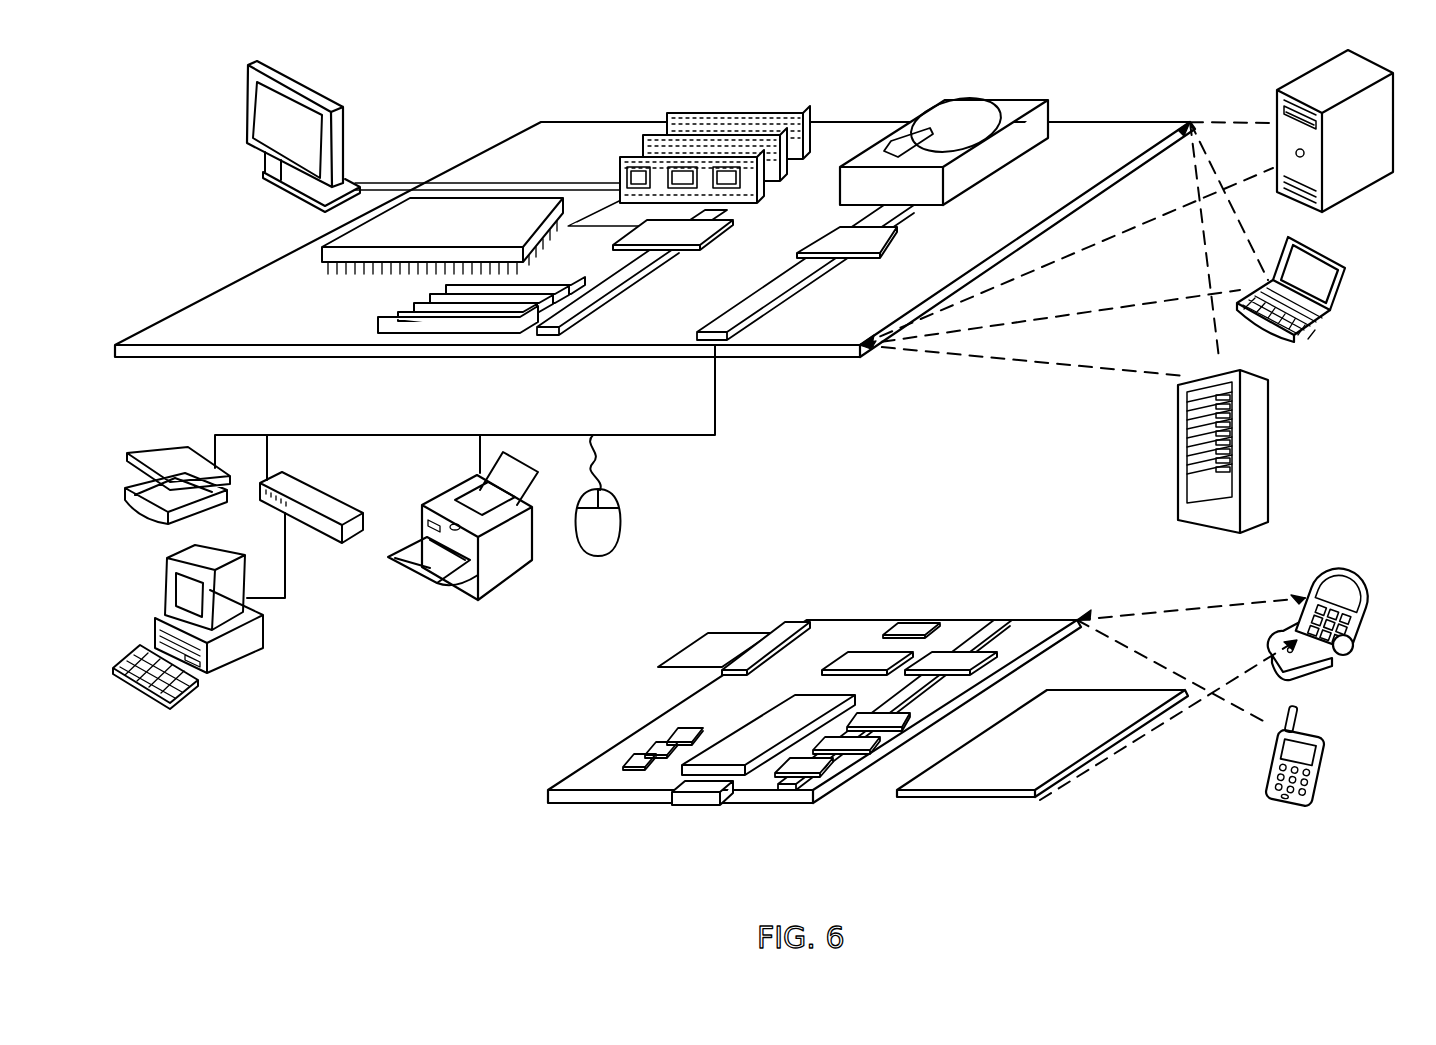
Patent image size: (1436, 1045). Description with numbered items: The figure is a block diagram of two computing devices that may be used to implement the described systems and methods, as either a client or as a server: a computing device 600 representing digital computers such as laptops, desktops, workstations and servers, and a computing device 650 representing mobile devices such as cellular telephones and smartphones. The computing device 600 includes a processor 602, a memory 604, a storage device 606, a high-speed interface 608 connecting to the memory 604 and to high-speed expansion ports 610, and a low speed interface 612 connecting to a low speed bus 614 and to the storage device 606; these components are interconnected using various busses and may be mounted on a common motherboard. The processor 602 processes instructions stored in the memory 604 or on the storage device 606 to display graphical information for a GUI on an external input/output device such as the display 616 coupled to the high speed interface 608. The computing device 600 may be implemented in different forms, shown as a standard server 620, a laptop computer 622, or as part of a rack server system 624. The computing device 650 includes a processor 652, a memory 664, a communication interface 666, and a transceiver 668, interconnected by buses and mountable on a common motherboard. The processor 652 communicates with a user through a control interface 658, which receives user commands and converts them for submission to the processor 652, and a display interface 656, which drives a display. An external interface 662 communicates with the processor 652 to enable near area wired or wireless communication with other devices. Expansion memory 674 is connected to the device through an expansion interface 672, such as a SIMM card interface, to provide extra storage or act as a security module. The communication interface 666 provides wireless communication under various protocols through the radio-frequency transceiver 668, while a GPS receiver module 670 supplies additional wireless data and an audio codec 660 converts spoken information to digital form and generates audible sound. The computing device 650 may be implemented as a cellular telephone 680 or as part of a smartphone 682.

The computing device 600 is at (456, 92).
The processor 602 is at (330, 250).
The memory 604 is at (677, 118).
The storage device 606 is at (945, 100).
The high-speed interface 608 is at (650, 233).
The high-speed expansion ports 610 is at (400, 313).
The low speed interface 612 is at (828, 235).
The low speed bus 614 is at (727, 343).
The display 616 is at (248, 67).
The standard server 620 is at (1277, 106).
The laptop computer 622 is at (1345, 270).
The rack server system 624 is at (1177, 478).
The computing device 650 is at (527, 800).
The processor 652 is at (740, 757).
The display interface 656 is at (815, 763).
The control interface 658 is at (850, 743).
The audio codec 660 is at (875, 718).
The external interface 662 is at (700, 803).
The memory 664 is at (650, 752).
The communication interface 666 is at (868, 658).
The transceiver 668 is at (953, 660).
The GPS receiver module 670 is at (918, 626).
The expansion interface 672 is at (787, 632).
The expansion memory 674 is at (700, 632).
The cellular telephone 680 is at (1328, 581).
The smartphone 682 is at (1267, 762).